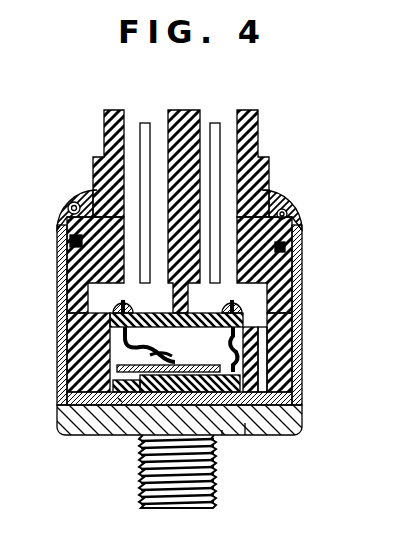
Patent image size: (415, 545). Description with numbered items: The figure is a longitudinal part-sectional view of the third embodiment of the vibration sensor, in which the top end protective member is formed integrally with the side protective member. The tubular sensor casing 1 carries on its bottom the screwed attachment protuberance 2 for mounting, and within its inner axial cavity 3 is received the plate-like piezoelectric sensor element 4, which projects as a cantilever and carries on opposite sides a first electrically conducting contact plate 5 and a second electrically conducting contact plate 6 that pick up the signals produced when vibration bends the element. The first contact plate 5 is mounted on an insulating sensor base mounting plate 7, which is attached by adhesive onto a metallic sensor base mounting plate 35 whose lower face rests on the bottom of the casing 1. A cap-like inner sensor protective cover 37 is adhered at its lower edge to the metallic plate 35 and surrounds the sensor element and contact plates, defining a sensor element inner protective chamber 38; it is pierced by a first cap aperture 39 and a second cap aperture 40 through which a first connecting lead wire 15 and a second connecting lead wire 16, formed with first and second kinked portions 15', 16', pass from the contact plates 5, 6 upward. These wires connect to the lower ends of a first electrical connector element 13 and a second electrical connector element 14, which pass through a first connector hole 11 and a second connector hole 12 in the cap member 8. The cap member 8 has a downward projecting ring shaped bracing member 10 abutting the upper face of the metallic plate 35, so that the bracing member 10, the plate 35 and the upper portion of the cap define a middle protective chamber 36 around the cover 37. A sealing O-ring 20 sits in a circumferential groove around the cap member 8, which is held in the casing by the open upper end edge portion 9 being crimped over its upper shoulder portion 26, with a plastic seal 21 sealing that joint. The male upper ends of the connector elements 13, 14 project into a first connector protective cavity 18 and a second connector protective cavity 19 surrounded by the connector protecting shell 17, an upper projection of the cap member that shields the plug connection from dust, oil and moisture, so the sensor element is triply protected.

The tubular sensor casing 1 is at (292, 415).
The screwed attachment protuberance 2 is at (218, 485).
The inner axial cavity 3 is at (75, 397).
The sensor element 4 is at (157, 358).
The first electrically conducting contact plate 5 is at (222, 434).
The second electrically conducting contact plate 6 is at (201, 365).
The insulating sensor base mounting plate 7 is at (245, 423).
The cap member 8 is at (297, 215).
The open upper end edge portion 9 is at (270, 206).
The ring shaped bracing member 10 is at (283, 380).
The first connector hole 11 is at (220, 252).
The second connector hole 12 is at (140, 240).
The first electrical connector element 13 is at (216, 125).
The second electrical connector element 14 is at (145, 125).
The first connecting lead wire 15 is at (281, 345).
The first kinked portion 15' is at (209, 303).
The second connecting lead wire 16 is at (141, 346).
The second kinked portion 16' is at (149, 303).
The connector protecting shell 17 is at (258, 112).
The first connector protective cavity 18 is at (230, 150).
The second connector protective cavity 19 is at (130, 145).
The sealing O-ring 20 is at (70, 241).
The plastic seal 21 is at (90, 195).
The upper shoulder portion 26 is at (68, 210).
The metallic sensor base mounting plate 35 is at (118, 398).
The middle protective chamber 36 is at (262, 316).
The inner sensor protective cover 37 is at (80, 350).
The sensor element inner protective chamber 38 is at (272, 362).
The first cap aperture 39 is at (238, 310).
The second cap aperture 40 is at (114, 310).